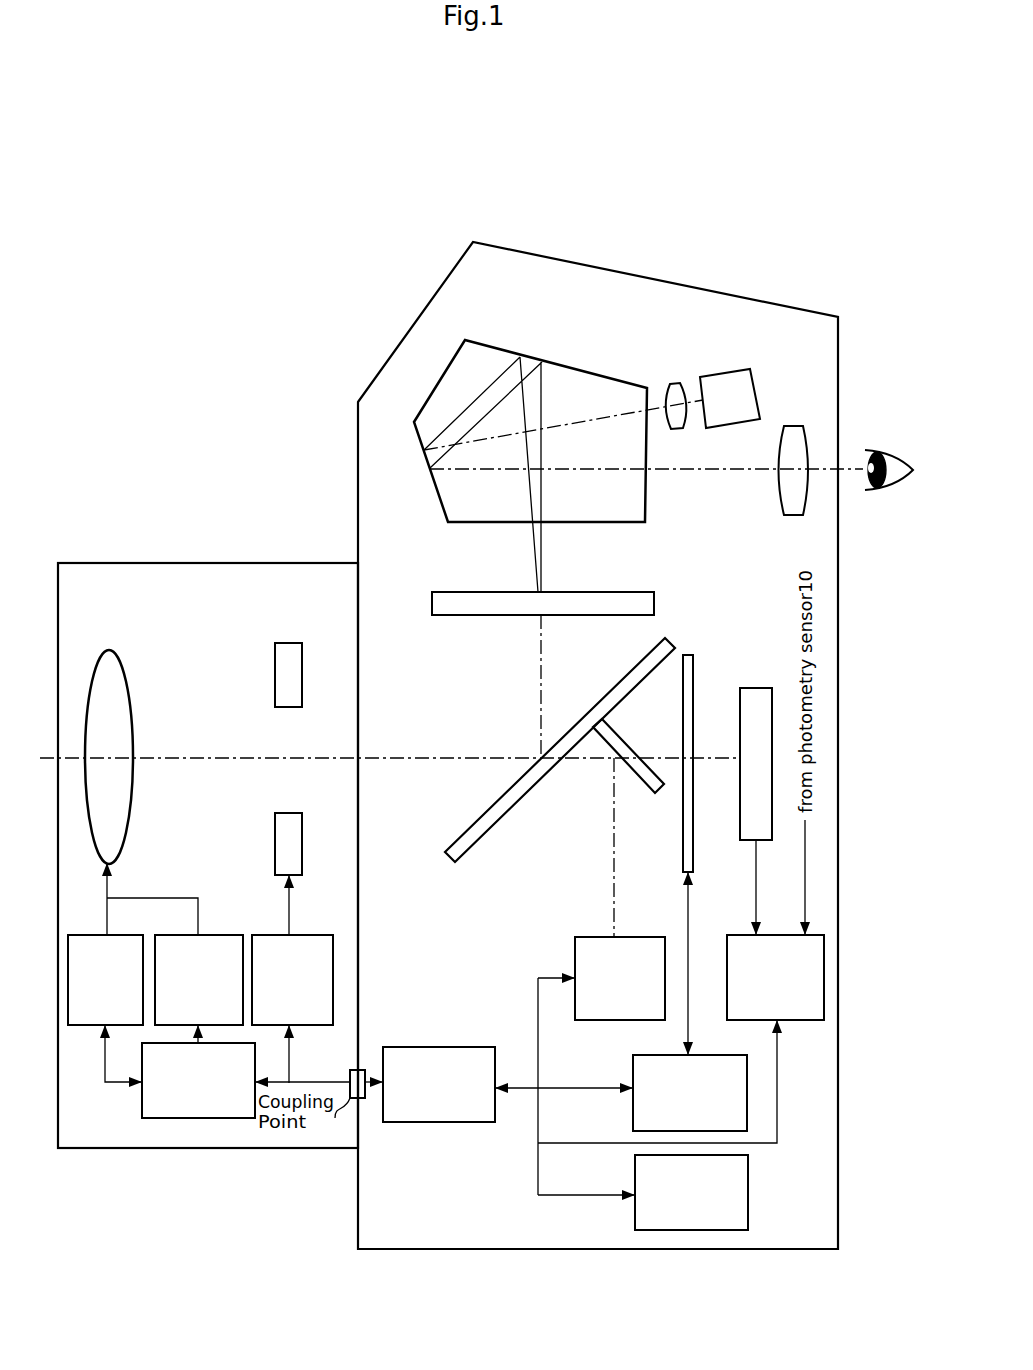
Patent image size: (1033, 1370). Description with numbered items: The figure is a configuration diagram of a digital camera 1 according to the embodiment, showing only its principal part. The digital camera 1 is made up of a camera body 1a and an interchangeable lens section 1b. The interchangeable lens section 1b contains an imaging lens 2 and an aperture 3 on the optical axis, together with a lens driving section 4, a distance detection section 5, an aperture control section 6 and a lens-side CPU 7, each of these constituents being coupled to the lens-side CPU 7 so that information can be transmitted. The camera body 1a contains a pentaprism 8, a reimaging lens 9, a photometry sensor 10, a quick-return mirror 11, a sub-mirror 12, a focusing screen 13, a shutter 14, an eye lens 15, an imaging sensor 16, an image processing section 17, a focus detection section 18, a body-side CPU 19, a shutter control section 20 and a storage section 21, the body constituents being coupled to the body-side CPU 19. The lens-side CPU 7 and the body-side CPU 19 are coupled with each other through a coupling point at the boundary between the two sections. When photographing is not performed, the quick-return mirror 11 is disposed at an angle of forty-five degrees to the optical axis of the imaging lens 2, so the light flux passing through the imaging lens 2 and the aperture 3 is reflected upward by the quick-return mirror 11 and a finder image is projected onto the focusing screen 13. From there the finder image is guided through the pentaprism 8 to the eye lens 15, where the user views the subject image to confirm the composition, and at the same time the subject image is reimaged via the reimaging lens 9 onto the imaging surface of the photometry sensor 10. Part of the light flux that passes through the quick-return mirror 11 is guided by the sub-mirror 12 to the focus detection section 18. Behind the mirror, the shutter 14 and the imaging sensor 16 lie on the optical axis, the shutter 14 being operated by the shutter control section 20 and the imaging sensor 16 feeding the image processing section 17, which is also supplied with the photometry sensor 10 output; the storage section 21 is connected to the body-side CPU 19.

The digital camera 1 is at (295, 316).
The camera body 1a is at (709, 262).
The interchangeable lens section 1b is at (211, 1148).
The imaging lens 2 is at (110, 651).
The aperture 3 is at (290, 643).
The lens driving section 4 is at (88, 1025).
The distance detection section 5 is at (222, 935).
The aperture control section 6 is at (307, 935).
The lens-side CPU 7 is at (190, 1118).
The pentaprism 8 is at (490, 345).
The reimaging lens 9 is at (668, 392).
The photometry sensor 10 is at (728, 372).
The quick-return mirror 11 is at (470, 856).
The sub-mirror 12 is at (638, 758).
The focusing screen 13 is at (638, 592).
The shutter 14 is at (688, 655).
The eye lens 15 is at (792, 517).
The imaging sensor 16 is at (762, 688).
The image processing section 17 is at (745, 935).
The focus detection section 18 is at (610, 1020).
The body-side CPU 19 is at (420, 1122).
The shutter control section 20 is at (632, 1100).
The storage section 21 is at (748, 1200).